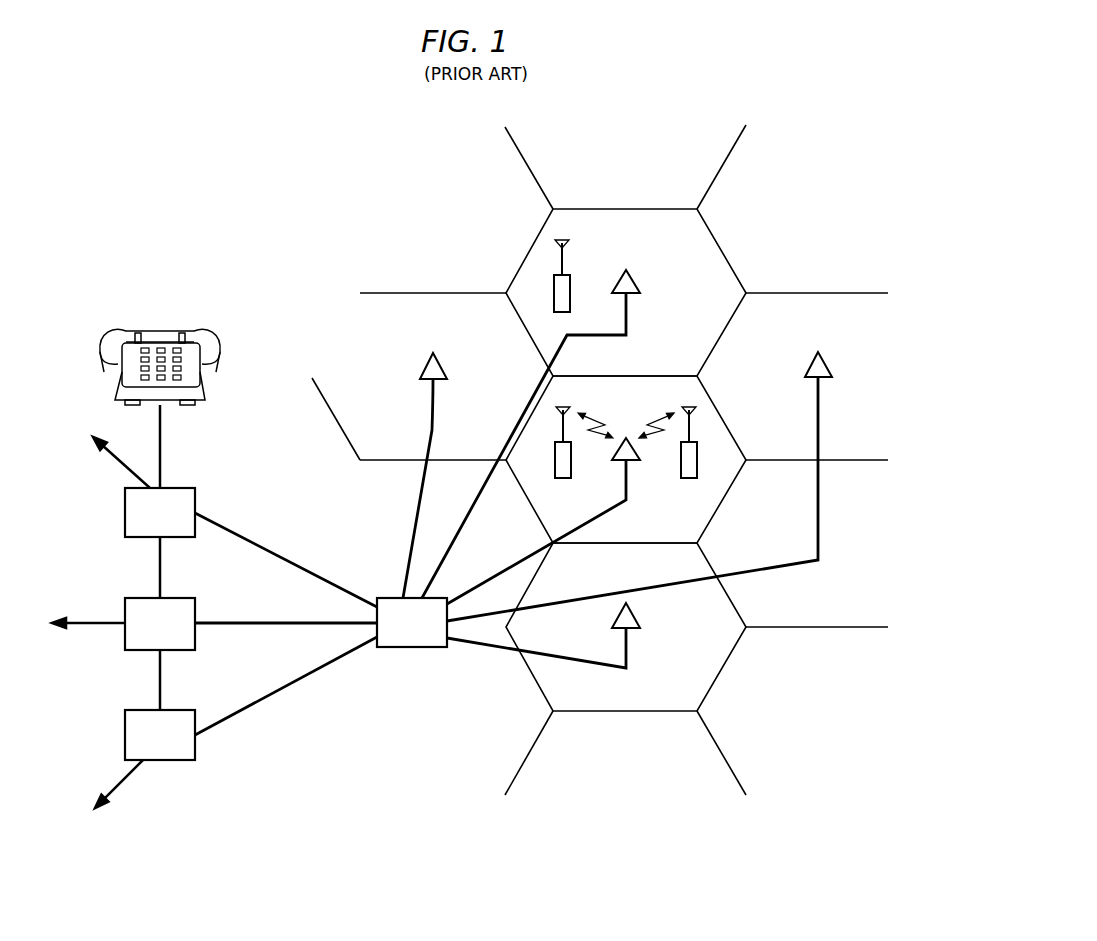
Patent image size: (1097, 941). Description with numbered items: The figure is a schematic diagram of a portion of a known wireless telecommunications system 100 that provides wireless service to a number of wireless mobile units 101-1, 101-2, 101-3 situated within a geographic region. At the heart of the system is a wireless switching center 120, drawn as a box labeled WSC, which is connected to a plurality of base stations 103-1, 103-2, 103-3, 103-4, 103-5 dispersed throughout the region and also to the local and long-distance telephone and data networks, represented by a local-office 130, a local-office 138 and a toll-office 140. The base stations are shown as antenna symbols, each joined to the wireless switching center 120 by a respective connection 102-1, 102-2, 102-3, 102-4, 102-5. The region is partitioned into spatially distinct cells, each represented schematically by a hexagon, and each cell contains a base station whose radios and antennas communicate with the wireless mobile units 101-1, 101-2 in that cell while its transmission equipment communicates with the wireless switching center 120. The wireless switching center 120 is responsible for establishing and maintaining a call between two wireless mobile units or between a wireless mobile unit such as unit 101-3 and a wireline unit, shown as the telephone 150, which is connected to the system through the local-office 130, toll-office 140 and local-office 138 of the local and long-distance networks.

The wireless telecommunications system 100 is at (312, 185).
The wireless mobile unit 150 is at (161, 325).
The local-office 130 is at (125, 509).
The toll-office 140 is at (134, 598).
The local-office 138 is at (125, 735).
The wireless switching center 120 is at (407, 650).
The wireless mobile unit 101-1 is at (563, 480).
The wireless mobile unit 101-2 is at (689, 480).
The wireless mobile unit 101-3 is at (572, 290).
The wireline connection to base station 102-1 is at (493, 580).
The wireline connection to base station 102-2 is at (467, 512).
The wireline connection to base station 102-3 is at (412, 526).
The wireline connection to base station 102-4 is at (528, 606).
The wireline connection to base station 102-5 is at (475, 645).
The base station 103-1 is at (628, 475).
The base station 103-2 is at (628, 317).
The base station 103-3 is at (431, 402).
The base station 103-4 is at (820, 410).
The base station 103-5 is at (628, 648).